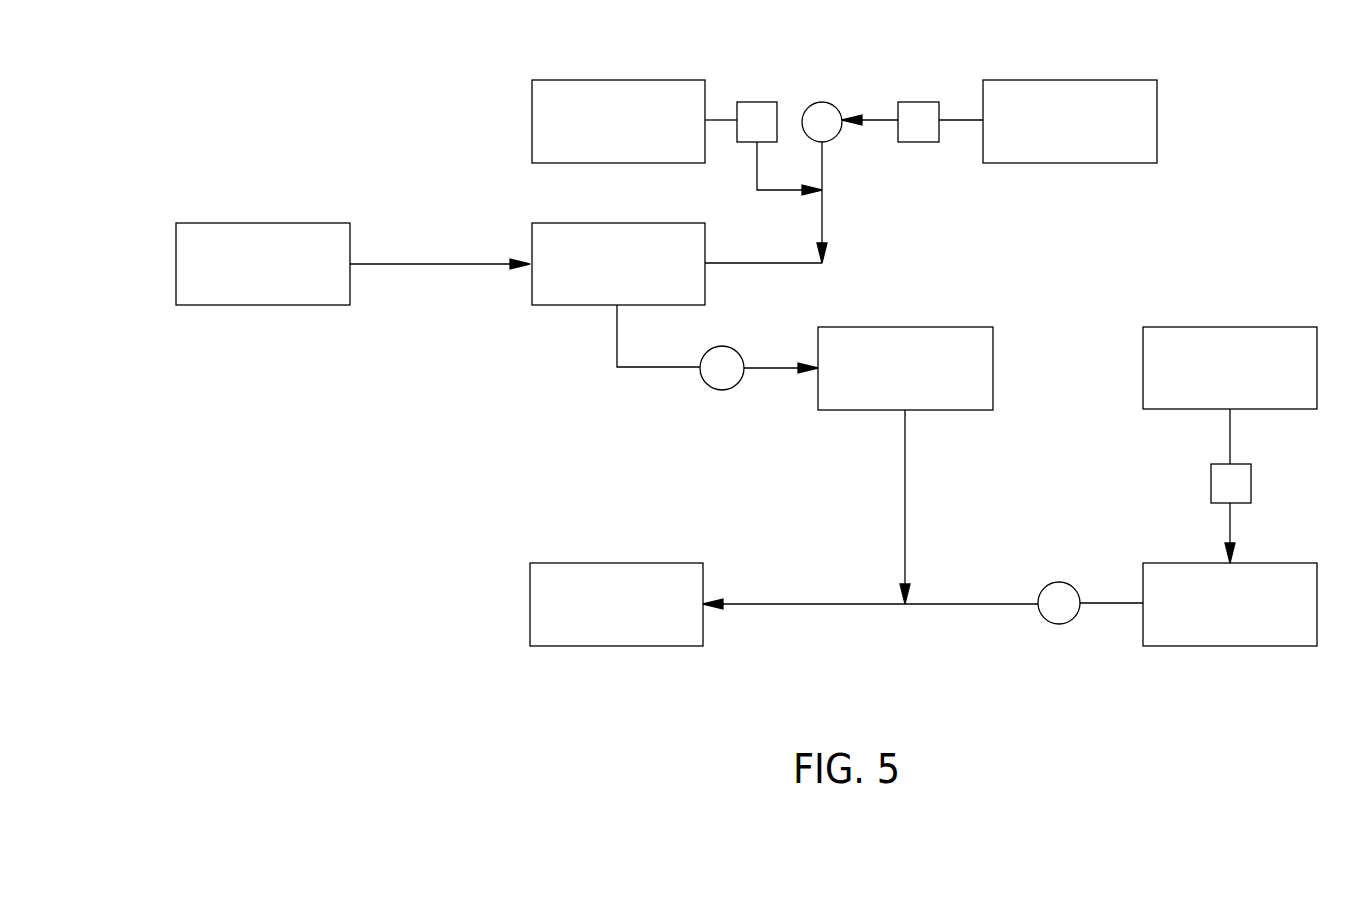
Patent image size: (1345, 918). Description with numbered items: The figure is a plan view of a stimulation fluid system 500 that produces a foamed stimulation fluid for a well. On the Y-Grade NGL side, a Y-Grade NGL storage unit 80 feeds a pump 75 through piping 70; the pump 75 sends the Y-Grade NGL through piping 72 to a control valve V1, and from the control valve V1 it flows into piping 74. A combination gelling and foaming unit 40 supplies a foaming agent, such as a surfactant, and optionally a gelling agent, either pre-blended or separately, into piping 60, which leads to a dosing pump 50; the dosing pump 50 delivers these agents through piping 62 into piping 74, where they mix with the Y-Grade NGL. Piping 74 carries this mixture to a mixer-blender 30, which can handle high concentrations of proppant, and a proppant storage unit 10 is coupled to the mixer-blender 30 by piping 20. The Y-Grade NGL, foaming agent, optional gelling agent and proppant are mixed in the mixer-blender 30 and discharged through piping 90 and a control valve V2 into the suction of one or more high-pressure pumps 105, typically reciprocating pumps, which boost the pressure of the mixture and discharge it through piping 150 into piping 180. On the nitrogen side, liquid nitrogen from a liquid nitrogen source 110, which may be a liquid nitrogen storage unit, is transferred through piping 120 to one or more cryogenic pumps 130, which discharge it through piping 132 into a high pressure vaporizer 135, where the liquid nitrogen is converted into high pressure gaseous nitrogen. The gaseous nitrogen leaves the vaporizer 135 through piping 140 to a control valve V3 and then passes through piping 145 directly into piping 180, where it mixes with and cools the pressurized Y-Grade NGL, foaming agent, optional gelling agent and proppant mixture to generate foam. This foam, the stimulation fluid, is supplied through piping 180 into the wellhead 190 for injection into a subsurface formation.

The stimulation fluid system 500 is at (335, 467).
The proppant storage unit 10 is at (283, 223).
The piping 20 is at (425, 268).
The mixer-blender 30 is at (638, 223).
The combination gelling and foaming unit 40 is at (647, 80).
The dosing pump 50 is at (757, 102).
The piping 60 is at (725, 120).
The piping 62 is at (775, 192).
The piping 70 is at (960, 124).
The piping 72 is at (878, 124).
The piping 74 is at (825, 210).
The pump 75 is at (918, 102).
The Y-Grade NGL storage unit 80 is at (1082, 80).
The piping 90 is at (617, 345).
The high-pressure pumps 105 is at (910, 327).
The liquid nitrogen source 110 is at (1235, 327).
The piping 120 is at (1230, 437).
The cryogenic pumps 130 is at (1251, 483).
The piping 132 is at (1230, 525).
The high pressure vaporizer 135 is at (1203, 562).
The piping 140 is at (1105, 604).
The piping 145 is at (990, 604).
The piping 150 is at (905, 437).
The piping 180 is at (787, 604).
The wellhead 190 is at (598, 563).
The control valve V1 is at (822, 102).
The control valve V2 is at (724, 347).
The control valve V3 is at (1056, 582).